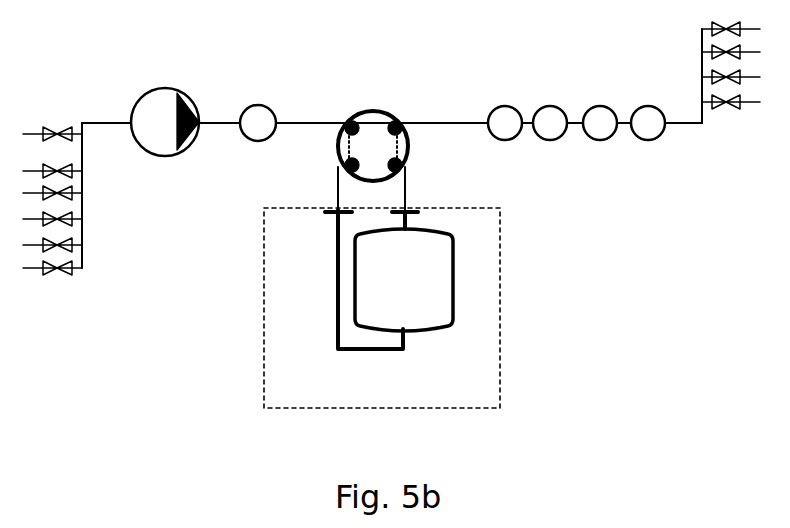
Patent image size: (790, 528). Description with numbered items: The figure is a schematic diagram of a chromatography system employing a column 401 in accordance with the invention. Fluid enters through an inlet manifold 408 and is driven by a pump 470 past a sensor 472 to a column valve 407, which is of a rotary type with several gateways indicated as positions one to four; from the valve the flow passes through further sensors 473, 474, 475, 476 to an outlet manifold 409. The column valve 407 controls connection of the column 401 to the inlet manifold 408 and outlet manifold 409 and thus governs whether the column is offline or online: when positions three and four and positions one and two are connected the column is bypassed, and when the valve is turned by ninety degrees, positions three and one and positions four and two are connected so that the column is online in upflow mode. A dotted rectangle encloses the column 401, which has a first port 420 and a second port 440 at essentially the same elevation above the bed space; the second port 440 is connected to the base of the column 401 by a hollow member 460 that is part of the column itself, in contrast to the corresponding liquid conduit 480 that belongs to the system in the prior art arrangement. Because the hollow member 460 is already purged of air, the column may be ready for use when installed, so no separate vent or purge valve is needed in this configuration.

The column 401 is at (455, 288).
The column valve 407 is at (375, 110).
The inlet manifold 408 is at (82, 224).
The outlet manifold 409 is at (702, 50).
The first port 420 is at (410, 207).
The second port 440 is at (335, 207).
The hollow member 460 is at (335, 277).
The pump 470 is at (172, 90).
The sensor 472 is at (262, 104).
The sensor 473 is at (503, 106).
The sensor 474 is at (548, 106).
The sensor 475 is at (603, 106).
The sensor 476 is at (665, 89).
The liquid conduit 480 is at (336, 185).